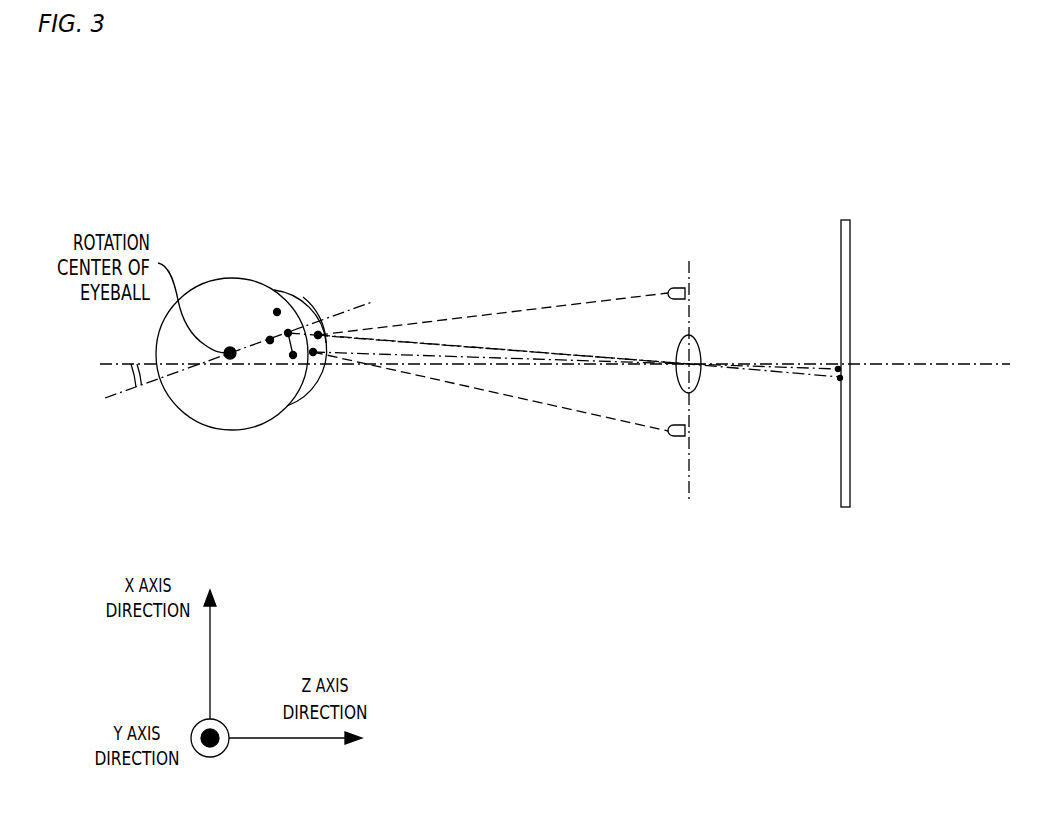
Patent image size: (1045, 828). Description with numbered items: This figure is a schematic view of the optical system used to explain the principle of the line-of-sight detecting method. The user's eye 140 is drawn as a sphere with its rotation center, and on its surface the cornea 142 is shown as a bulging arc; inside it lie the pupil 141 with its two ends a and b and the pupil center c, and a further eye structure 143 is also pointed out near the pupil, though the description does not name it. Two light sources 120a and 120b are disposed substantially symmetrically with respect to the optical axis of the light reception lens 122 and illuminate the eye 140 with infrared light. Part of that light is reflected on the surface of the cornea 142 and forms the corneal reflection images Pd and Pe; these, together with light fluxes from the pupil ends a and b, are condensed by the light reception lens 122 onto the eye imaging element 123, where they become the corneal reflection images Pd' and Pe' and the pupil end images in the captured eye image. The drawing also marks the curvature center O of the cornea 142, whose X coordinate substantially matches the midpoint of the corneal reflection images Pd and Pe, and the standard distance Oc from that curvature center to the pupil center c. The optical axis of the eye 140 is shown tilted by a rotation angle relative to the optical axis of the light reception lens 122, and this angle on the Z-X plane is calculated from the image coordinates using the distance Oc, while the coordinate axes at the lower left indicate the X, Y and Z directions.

The eye 140 is at (193, 290).
The pupil 141 is at (283, 298).
The cornea 142 is at (303, 297).
The iris 143 is at (277, 310).
The light source 120a is at (675, 437).
The light source 120b is at (673, 287).
The light reception lens 122 is at (677, 393).
The eye imaging element 123 is at (840, 507).
The curvature center of the cornea O is at (270, 340).
The standard distance from corneal curvature center to pupil center Oc is at (270, 340).
The pupil end a is at (288, 333).
The pupil end b is at (293, 355).
The pupil center c is at (318, 335).
The corneal reflection image Pd is at (348, 437).
The corneal reflection image Pe is at (399, 419).
The corneal reflection image in the eye image Pd' is at (884, 394).
The corneal reflection image in the eye image Pe' is at (885, 431).